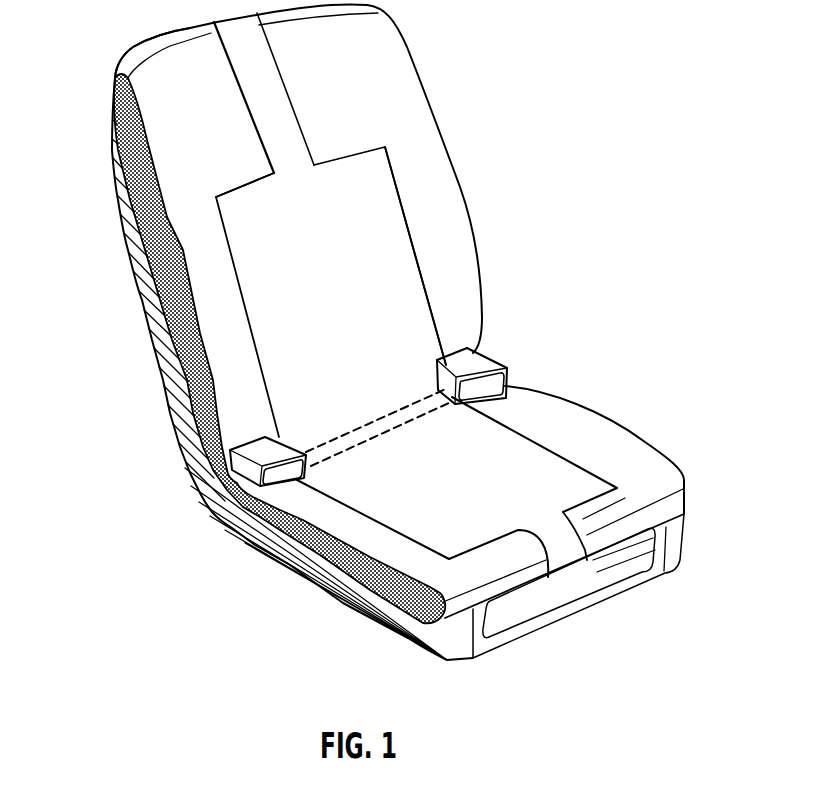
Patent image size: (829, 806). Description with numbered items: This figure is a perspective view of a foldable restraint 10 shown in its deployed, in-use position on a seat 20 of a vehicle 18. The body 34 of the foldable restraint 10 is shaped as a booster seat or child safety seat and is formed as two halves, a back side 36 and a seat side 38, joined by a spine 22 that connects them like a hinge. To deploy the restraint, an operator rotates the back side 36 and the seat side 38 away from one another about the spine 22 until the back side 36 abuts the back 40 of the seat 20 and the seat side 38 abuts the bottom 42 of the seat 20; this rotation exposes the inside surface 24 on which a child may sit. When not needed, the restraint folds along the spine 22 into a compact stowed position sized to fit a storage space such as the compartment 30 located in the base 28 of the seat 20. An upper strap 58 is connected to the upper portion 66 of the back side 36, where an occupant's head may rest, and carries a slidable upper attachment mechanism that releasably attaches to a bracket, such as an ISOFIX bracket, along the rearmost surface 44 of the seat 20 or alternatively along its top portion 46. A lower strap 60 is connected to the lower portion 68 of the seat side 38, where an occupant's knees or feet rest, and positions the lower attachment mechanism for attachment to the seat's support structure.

The foldable restraint 10 is at (387, 155).
The vehicle 18 is at (650, 270).
The seat 20 is at (476, 220).
The spine 22 is at (372, 433).
The inside surface 24 is at (287, 283).
The base 28 is at (660, 543).
The compartment 30 is at (527, 613).
The body 34 is at (387, 220).
The back side 36 is at (428, 317).
The seat side 38 is at (332, 499).
The back 40 is at (397, 88).
The bottom 42 is at (603, 428).
The rearmost surface 44 is at (112, 127).
The top portion 46 is at (143, 56).
The upper strap 58 is at (270, 67).
The lower strap 60 is at (560, 554).
The upper portion 66 is at (246, 187).
The lower portion 68 is at (451, 548).